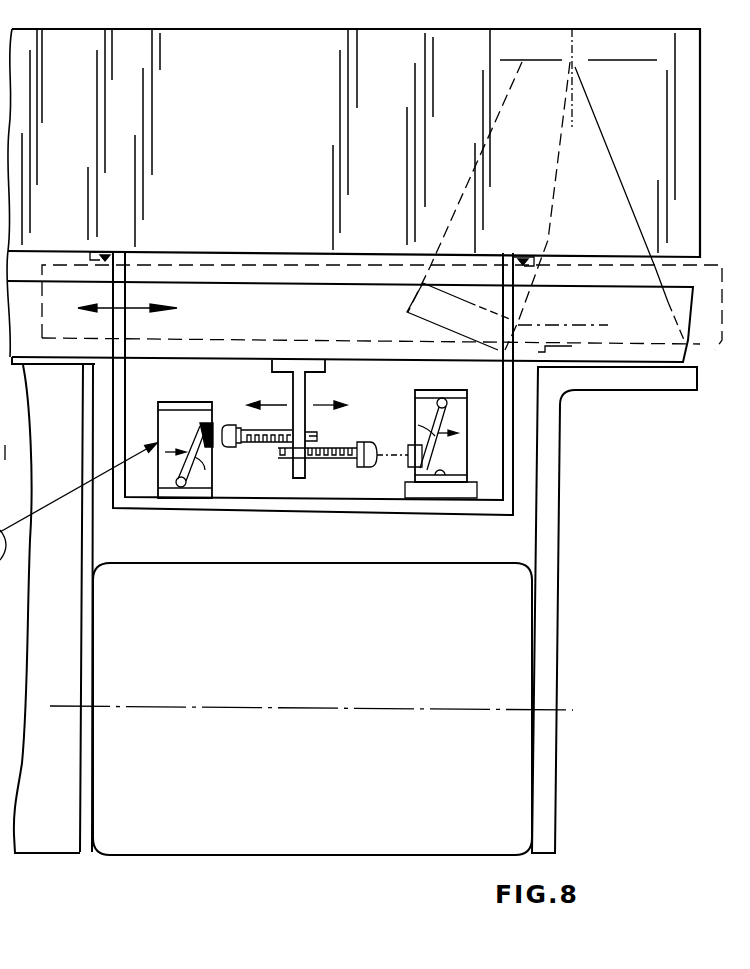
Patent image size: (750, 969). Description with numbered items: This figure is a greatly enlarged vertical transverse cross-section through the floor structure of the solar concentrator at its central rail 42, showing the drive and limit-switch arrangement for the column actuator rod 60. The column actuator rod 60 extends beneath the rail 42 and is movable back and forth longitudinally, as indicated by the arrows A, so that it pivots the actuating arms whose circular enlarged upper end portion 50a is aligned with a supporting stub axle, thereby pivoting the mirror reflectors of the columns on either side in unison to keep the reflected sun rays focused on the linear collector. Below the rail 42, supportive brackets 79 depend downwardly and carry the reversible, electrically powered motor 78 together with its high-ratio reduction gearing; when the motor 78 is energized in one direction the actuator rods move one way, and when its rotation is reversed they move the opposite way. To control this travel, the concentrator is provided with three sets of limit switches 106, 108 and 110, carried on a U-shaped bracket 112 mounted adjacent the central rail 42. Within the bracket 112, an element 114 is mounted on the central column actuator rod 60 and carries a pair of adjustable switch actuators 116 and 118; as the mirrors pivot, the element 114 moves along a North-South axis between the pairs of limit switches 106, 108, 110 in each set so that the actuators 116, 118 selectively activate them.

The joist or rail 42 is at (192, 149).
The enlarged upper end portion 50a is at (563, 200).
The column actuator rod 60 is at (693, 322).
The reversible electrically powered motor 78 is at (303, 629).
The supportive brackets 79 is at (93, 497).
The limit switch set 106 is at (342, 475).
The limit switch set 108 is at (342, 475).
The limit switch set 110 is at (470, 450).
The U-shaped bracket 112 is at (273, 507).
The element 114 is at (307, 383).
The adjustable switch actuator 116 is at (250, 443).
The adjustable switch actuator 118 is at (321, 450).
The arrows indicating longitudinal movement A is at (128, 302).